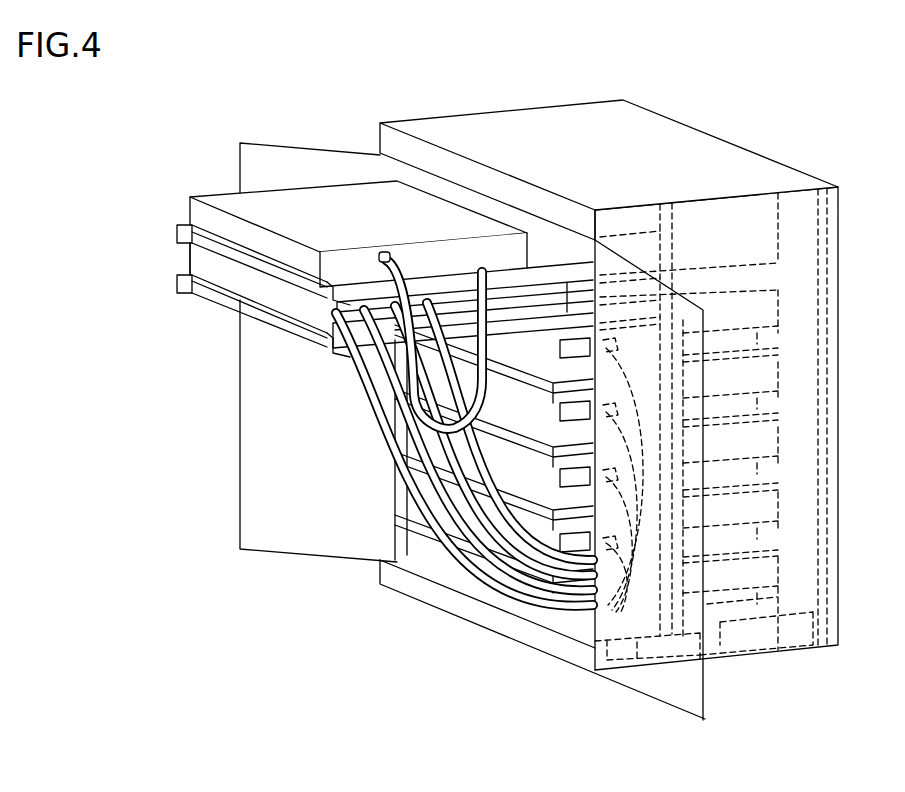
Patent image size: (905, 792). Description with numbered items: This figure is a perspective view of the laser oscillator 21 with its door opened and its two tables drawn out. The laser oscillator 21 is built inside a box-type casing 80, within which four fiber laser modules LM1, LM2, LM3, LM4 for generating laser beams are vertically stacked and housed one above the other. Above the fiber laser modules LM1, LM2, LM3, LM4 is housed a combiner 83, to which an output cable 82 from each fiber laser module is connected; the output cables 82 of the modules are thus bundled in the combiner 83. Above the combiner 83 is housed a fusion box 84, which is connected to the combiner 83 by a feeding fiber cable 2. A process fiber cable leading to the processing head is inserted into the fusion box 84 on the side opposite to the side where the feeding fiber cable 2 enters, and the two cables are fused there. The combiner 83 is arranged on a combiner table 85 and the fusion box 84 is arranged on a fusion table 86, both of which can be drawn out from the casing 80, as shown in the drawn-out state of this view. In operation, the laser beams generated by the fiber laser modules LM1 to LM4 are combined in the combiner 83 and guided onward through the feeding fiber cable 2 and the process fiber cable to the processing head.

The feeding fiber cable 2 is at (487, 300).
The laser oscillator 21 is at (711, 118).
The casing 80 is at (730, 166).
The output cable 82 is at (565, 575).
The combiner 83 is at (248, 285).
The fusion box 84 is at (250, 236).
The combiner table 85 is at (353, 343).
The fusion table 86 is at (178, 238).
The fiber laser module LM1 is at (537, 352).
The fiber laser module LM2 is at (506, 409).
The fiber laser module LM3 is at (510, 467).
The fiber laser module LM4 is at (413, 505).